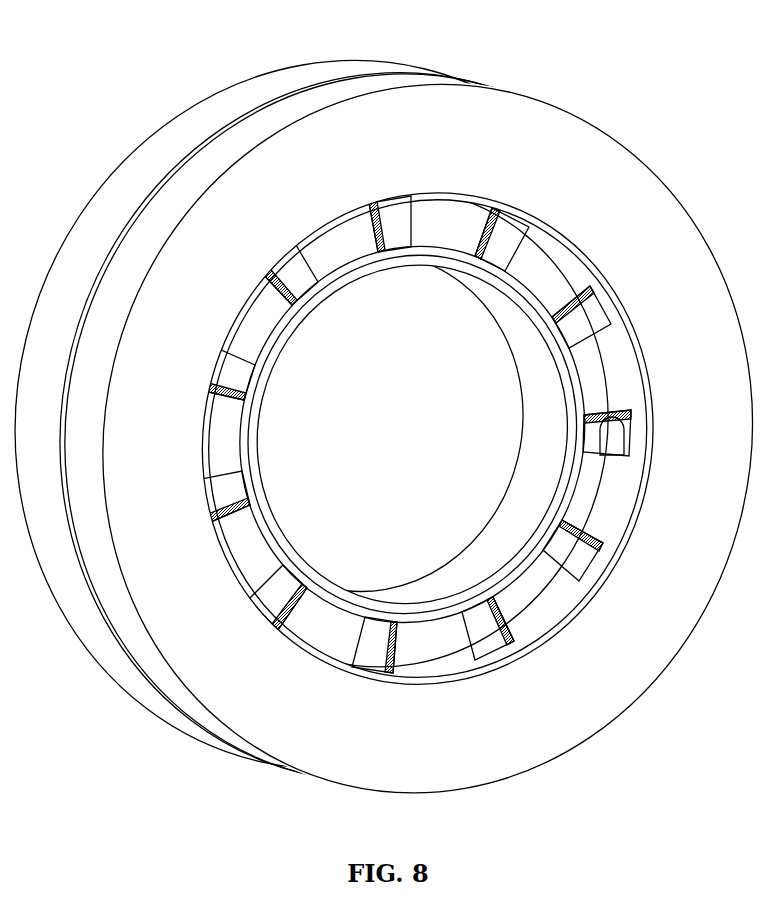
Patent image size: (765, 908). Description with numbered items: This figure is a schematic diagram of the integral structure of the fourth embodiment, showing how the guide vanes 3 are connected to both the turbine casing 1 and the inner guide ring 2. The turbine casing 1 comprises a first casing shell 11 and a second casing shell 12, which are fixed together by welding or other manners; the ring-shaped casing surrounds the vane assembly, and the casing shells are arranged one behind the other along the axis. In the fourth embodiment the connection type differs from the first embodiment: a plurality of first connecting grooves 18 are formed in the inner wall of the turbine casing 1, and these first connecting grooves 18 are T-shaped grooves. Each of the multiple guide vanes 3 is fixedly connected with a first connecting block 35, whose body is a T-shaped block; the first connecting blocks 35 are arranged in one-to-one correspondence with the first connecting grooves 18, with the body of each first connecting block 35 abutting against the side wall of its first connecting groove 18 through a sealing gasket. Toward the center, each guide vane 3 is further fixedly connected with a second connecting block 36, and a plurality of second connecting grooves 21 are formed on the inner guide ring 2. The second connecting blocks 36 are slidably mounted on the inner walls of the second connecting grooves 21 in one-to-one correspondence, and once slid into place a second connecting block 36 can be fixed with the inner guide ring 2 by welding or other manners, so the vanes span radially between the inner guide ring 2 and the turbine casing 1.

The turbine casing 1 is at (382, 430).
The first casing shell 11 is at (118, 190).
The second casing shell 12 is at (586, 156).
The inner guide ring 2 is at (410, 428).
The second connecting groove 21 is at (523, 394).
The guide vane 3 is at (590, 330).
The first connecting groove 18 is at (630, 395).
The first connecting block 35 is at (632, 412).
The second connecting block 36 is at (545, 528).